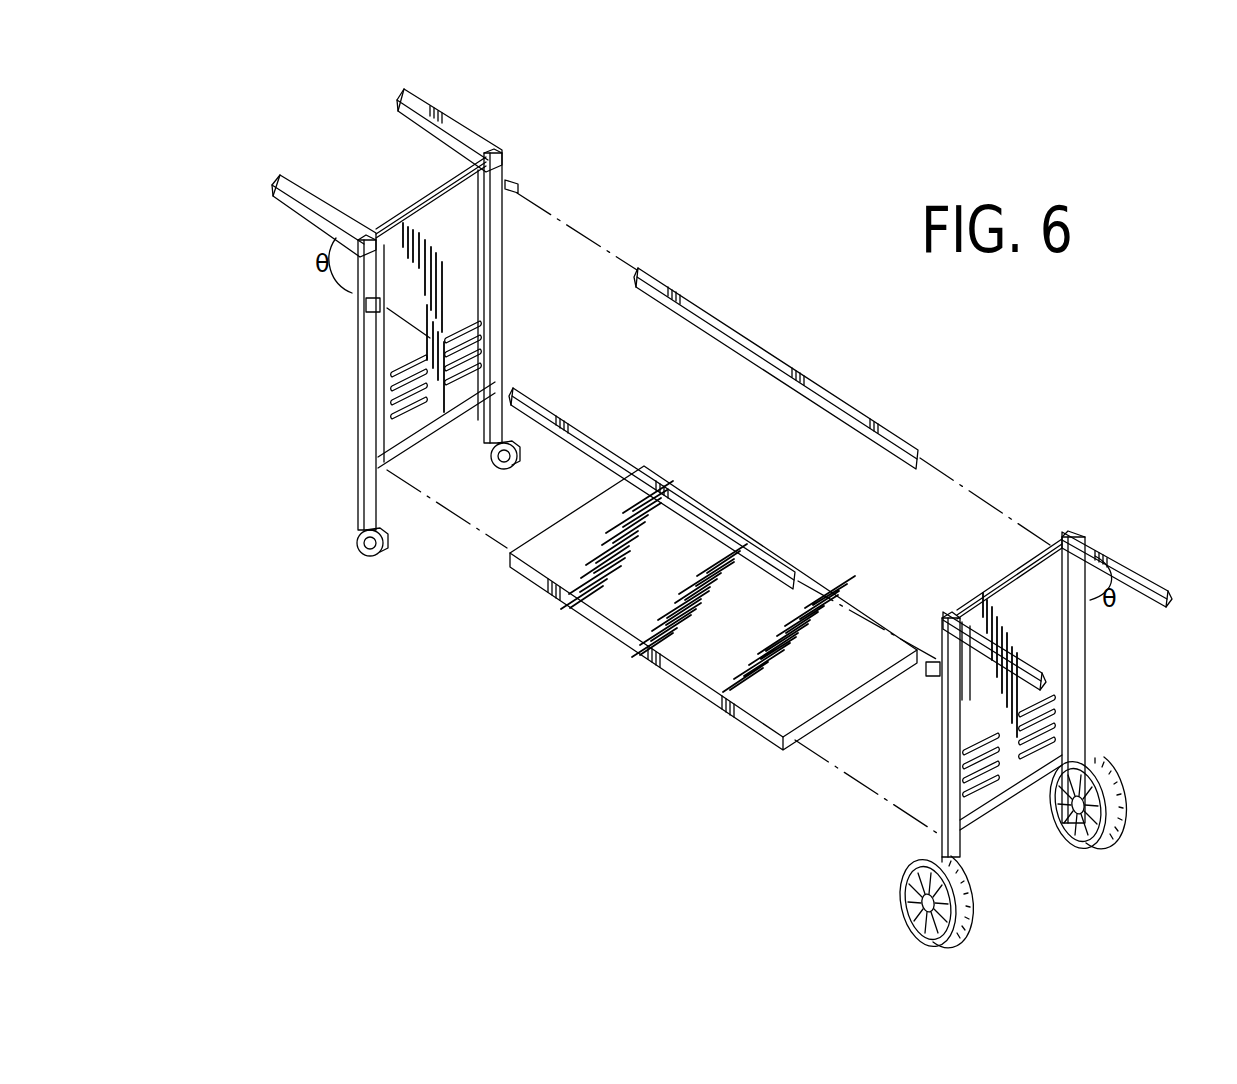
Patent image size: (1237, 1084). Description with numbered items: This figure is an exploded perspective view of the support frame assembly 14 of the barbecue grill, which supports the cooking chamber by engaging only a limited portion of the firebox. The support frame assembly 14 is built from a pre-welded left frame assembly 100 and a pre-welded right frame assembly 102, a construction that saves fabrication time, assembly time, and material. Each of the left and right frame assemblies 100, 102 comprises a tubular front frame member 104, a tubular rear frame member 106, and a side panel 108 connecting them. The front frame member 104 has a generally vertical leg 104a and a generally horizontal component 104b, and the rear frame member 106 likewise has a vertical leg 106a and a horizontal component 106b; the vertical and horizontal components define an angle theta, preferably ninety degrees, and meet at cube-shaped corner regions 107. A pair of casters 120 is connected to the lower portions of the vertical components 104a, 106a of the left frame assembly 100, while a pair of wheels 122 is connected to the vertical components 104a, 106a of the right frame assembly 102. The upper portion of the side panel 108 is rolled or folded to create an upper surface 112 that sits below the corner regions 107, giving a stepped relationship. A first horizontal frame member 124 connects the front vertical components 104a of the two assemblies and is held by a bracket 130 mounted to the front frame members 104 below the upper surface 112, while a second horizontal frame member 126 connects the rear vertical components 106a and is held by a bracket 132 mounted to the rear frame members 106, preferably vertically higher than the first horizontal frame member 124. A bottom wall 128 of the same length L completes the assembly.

The support frame assembly 14 is at (988, 352).
The left frame assembly 100 is at (255, 340).
The right frame assembly 102 is at (1152, 508).
The front frame member 104 is at (290, 255).
The vertical component of front frame member 104a is at (358, 442).
The horizontal component of front frame member 104b is at (299, 189).
The rear frame member 106 is at (395, 140).
The vertical component of rear frame member 106a is at (503, 340).
The horizontal component of rear frame member 106b is at (427, 104).
The corner region 107 is at (505, 150).
The side panel 108 is at (462, 298).
The upper surface 112 is at (436, 186).
The casters 120 is at (512, 470).
The wheels 122 is at (1122, 826).
The first horizontal frame member 124 is at (612, 450).
The second horizontal frame member 126 is at (740, 335).
The bottom wall 128 is at (718, 658).
The bracket 130 is at (373, 308).
The bracket 132 is at (520, 185).